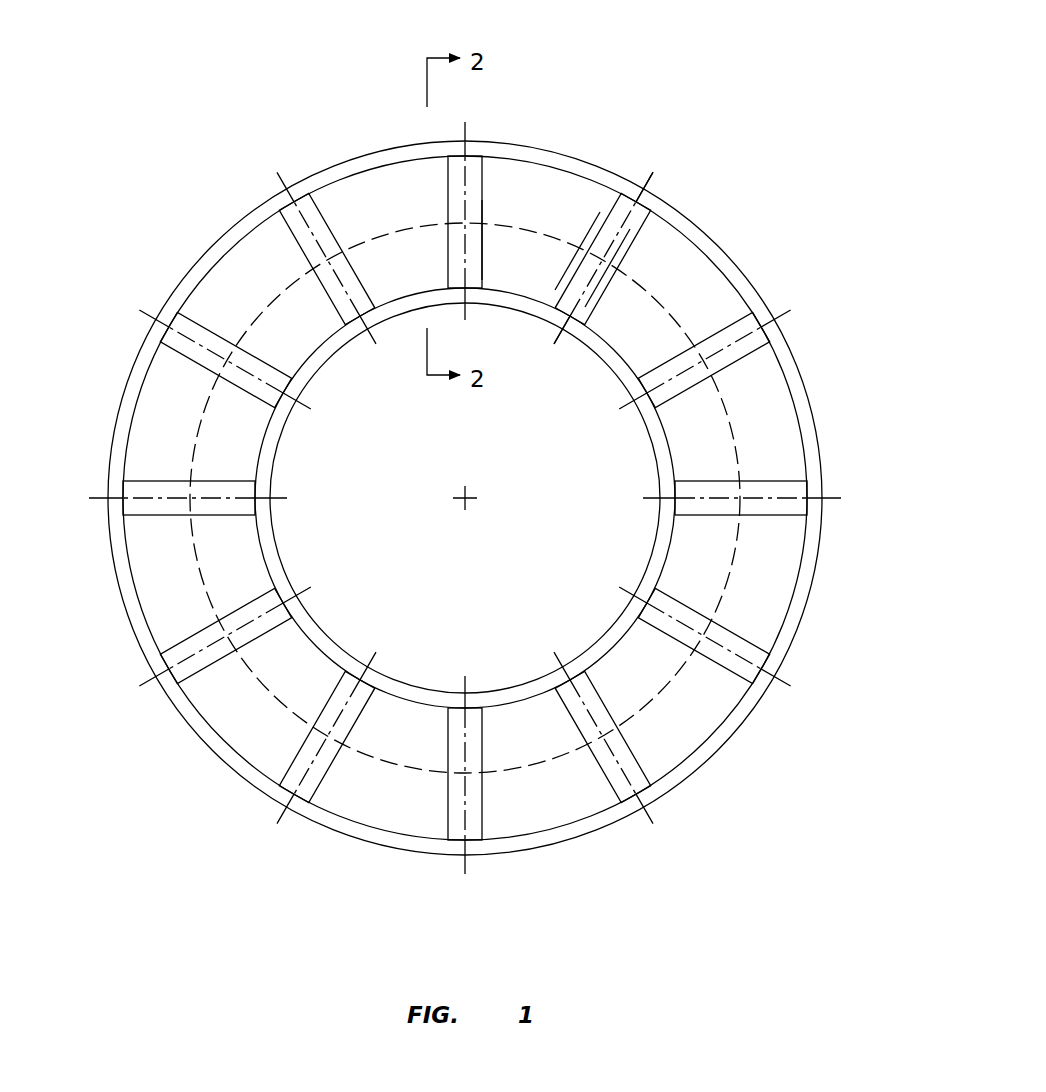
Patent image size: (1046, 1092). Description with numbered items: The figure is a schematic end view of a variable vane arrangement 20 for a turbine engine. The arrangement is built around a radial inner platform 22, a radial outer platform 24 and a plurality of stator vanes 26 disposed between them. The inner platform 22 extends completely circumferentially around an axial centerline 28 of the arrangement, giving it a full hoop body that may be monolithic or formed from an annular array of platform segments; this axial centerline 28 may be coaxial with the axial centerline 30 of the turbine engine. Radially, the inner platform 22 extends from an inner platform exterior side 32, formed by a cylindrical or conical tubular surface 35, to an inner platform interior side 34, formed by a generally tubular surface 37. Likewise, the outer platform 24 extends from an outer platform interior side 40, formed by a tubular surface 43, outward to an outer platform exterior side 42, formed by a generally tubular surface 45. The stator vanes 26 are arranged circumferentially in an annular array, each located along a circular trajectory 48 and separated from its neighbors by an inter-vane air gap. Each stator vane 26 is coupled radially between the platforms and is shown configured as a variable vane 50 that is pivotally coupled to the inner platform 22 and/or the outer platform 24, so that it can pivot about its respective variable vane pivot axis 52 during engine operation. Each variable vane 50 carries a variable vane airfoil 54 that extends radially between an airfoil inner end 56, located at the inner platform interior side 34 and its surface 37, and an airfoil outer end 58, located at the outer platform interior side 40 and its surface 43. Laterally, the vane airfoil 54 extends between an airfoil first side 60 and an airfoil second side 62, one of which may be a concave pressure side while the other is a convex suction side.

The variable vane arrangement 20 is at (465, 510).
The radial inner platform 22 is at (462, 498).
The radial outer platform 24 is at (441, 498).
The stator vanes 26 is at (465, 513).
The axial centerline 28 is at (476, 536).
The axial centerline of the turbine engine 30 is at (467, 503).
The inner platform exterior side 32 is at (465, 498).
The inner platform interior side 34 is at (462, 498).
The tubular surface 35 is at (273, 533).
The tubular surface 37 is at (258, 560).
The outer platform interior side 40 is at (465, 504).
The outer platform exterior side 42 is at (205, 748).
The tubular surface 43 is at (252, 748).
The tubular surface 45 is at (441, 498).
The circular trajectory 48 is at (738, 575).
The variable vane 50 is at (285, 237).
The variable vane pivot axis 52 is at (280, 182).
The variable vane airfoil 54 is at (591, 240).
The airfoil inner end 56 is at (572, 316).
The airfoil outer end 58 is at (645, 194).
The airfoil first side 60 is at (570, 280).
The airfoil second side 62 is at (597, 290).